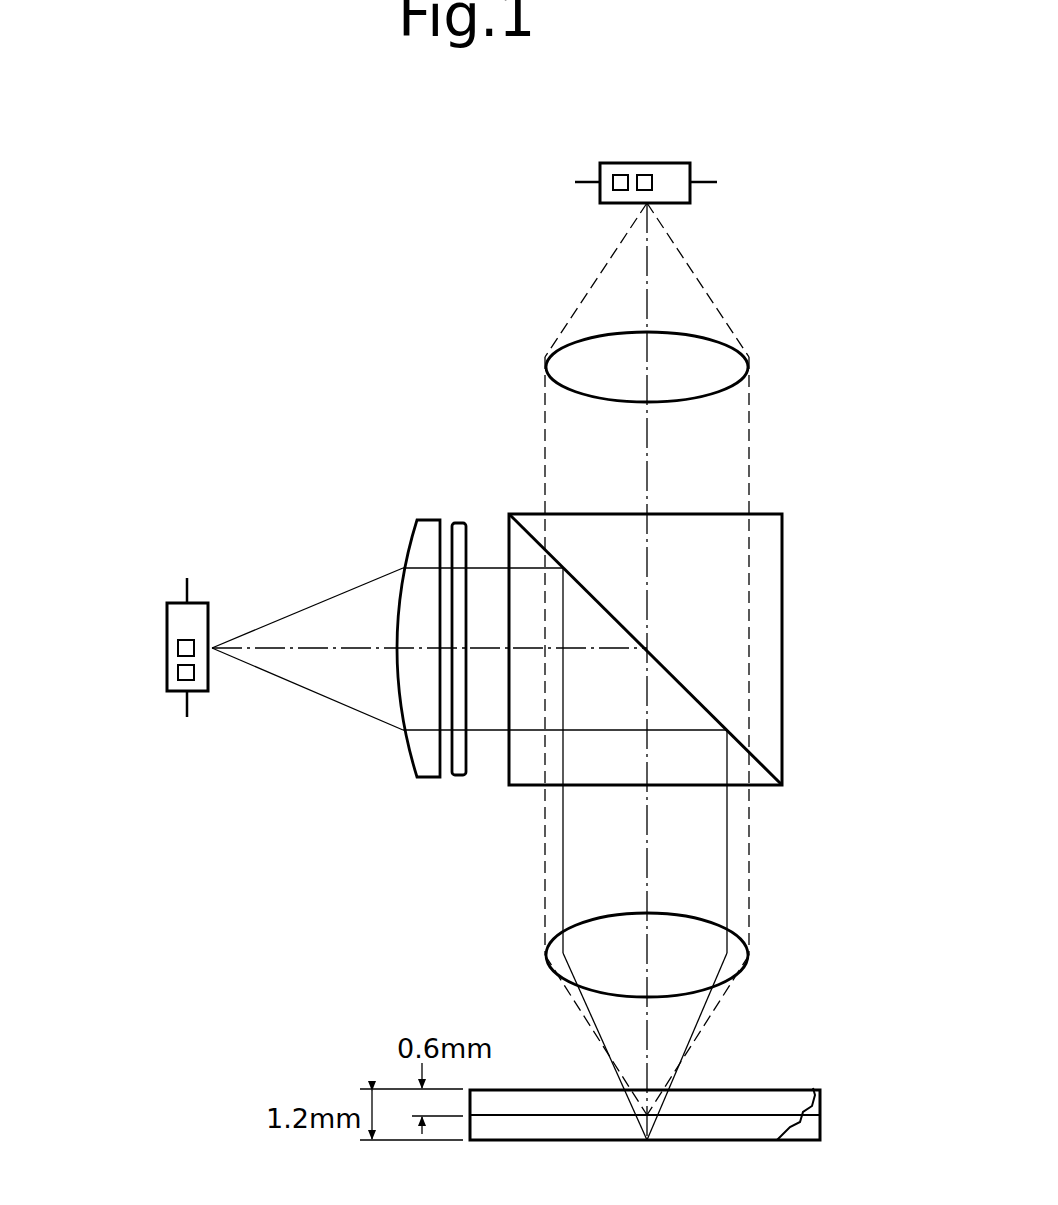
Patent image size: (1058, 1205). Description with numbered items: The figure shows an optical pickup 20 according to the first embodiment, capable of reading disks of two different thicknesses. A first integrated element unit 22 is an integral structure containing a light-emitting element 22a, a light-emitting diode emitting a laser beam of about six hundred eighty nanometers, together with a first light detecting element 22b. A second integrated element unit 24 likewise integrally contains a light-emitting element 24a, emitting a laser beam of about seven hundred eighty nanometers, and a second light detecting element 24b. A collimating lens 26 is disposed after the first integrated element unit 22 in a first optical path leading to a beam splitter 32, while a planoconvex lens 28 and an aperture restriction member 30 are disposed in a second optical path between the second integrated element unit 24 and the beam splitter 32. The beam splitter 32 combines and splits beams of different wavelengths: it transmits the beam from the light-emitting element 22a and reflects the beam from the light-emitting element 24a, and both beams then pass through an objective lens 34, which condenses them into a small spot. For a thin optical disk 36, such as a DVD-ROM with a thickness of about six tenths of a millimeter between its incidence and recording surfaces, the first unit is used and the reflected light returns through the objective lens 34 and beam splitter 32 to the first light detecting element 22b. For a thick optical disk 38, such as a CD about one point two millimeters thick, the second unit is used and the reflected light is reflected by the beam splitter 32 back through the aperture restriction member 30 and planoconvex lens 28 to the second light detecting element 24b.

The optical pickup 20 is at (402, 338).
The first integrated element unit 22 is at (673, 172).
The light-emitting element 22a is at (642, 173).
The first light detecting element 22b is at (620, 173).
The second integrated element unit 24 is at (172, 617).
The light-emitting element 24a is at (180, 646).
The second light detecting element 24b is at (180, 672).
The collimating lens 26 is at (725, 372).
The planoconvex lens 28 is at (420, 537).
The aperture restriction member 30 is at (458, 527).
The beam splitter 32 is at (768, 708).
The objective lens 34 is at (710, 957).
The thin optical disk 36 is at (757, 1097).
The thick optical disk 38 is at (820, 1118).